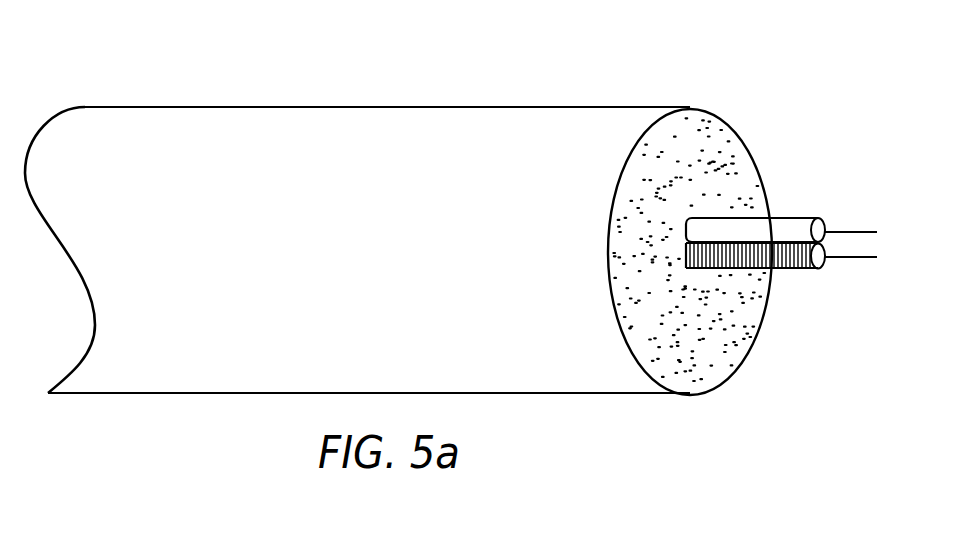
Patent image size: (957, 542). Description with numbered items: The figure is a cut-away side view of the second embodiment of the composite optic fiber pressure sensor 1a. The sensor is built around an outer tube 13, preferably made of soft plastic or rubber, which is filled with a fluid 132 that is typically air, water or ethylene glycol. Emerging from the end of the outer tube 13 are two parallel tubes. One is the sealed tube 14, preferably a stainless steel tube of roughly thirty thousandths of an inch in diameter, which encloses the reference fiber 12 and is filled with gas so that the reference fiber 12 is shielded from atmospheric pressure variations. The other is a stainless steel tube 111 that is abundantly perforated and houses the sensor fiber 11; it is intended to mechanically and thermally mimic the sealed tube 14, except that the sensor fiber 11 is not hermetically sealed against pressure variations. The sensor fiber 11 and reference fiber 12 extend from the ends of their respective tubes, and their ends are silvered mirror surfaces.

The composite optic fiber pressure sensor 1a is at (393, 96).
The outer tube 13 is at (692, 395).
The fluid 132 is at (698, 358).
The perforated stainless steel tube 111 is at (793, 218).
The sealed tube 14 is at (796, 268).
The sensor fiber 11 is at (845, 233).
The reference fiber 12 is at (845, 257).